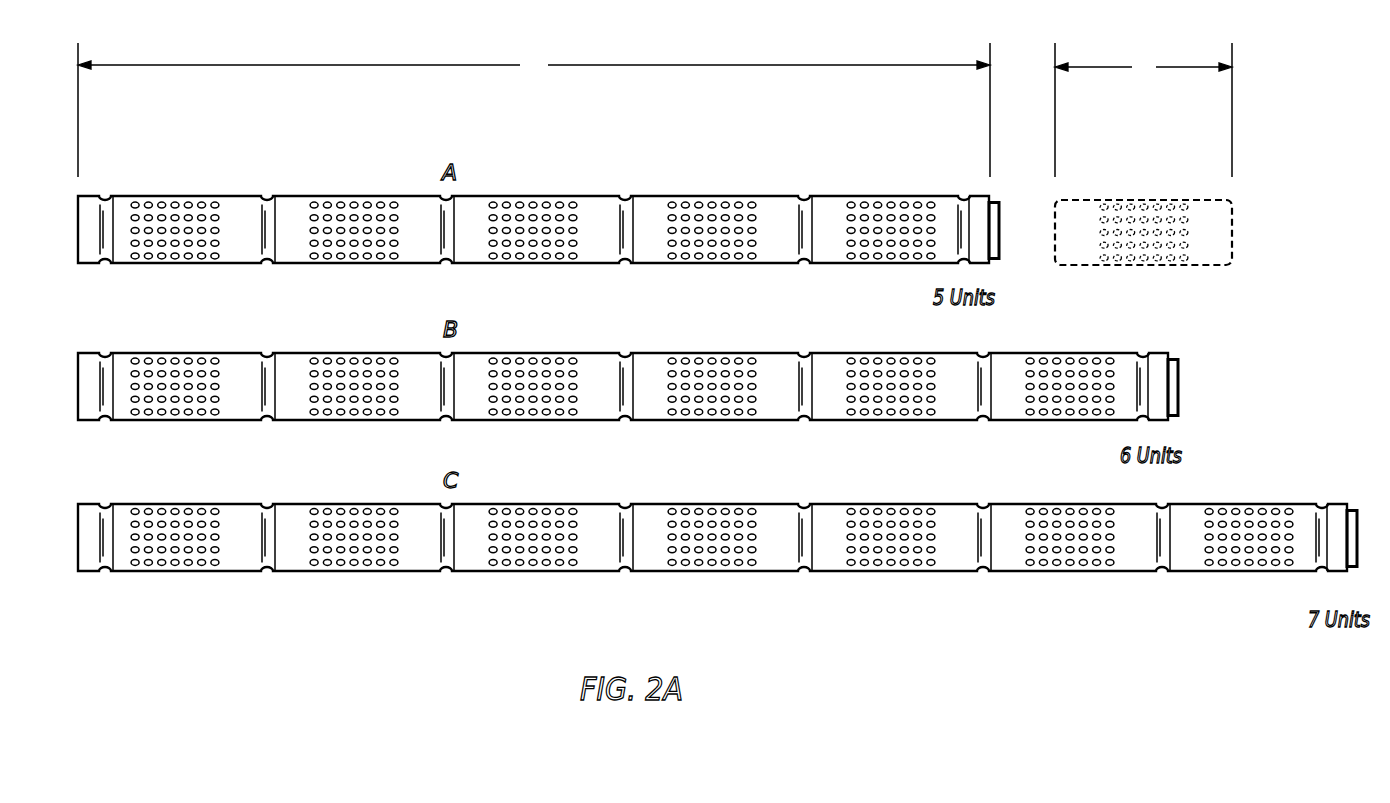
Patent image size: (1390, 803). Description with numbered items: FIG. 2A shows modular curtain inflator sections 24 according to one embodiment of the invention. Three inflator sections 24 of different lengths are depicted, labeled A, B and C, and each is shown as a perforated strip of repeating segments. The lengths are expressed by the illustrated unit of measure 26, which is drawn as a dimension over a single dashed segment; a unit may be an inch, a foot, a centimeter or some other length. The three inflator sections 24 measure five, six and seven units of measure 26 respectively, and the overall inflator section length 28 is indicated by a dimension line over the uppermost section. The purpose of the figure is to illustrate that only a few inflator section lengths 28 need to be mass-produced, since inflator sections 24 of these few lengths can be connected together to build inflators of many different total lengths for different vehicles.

The inflator section 24 is at (190, 216).
The unit of measure 26 is at (1143, 154).
The inflator section length 28 is at (534, 110).